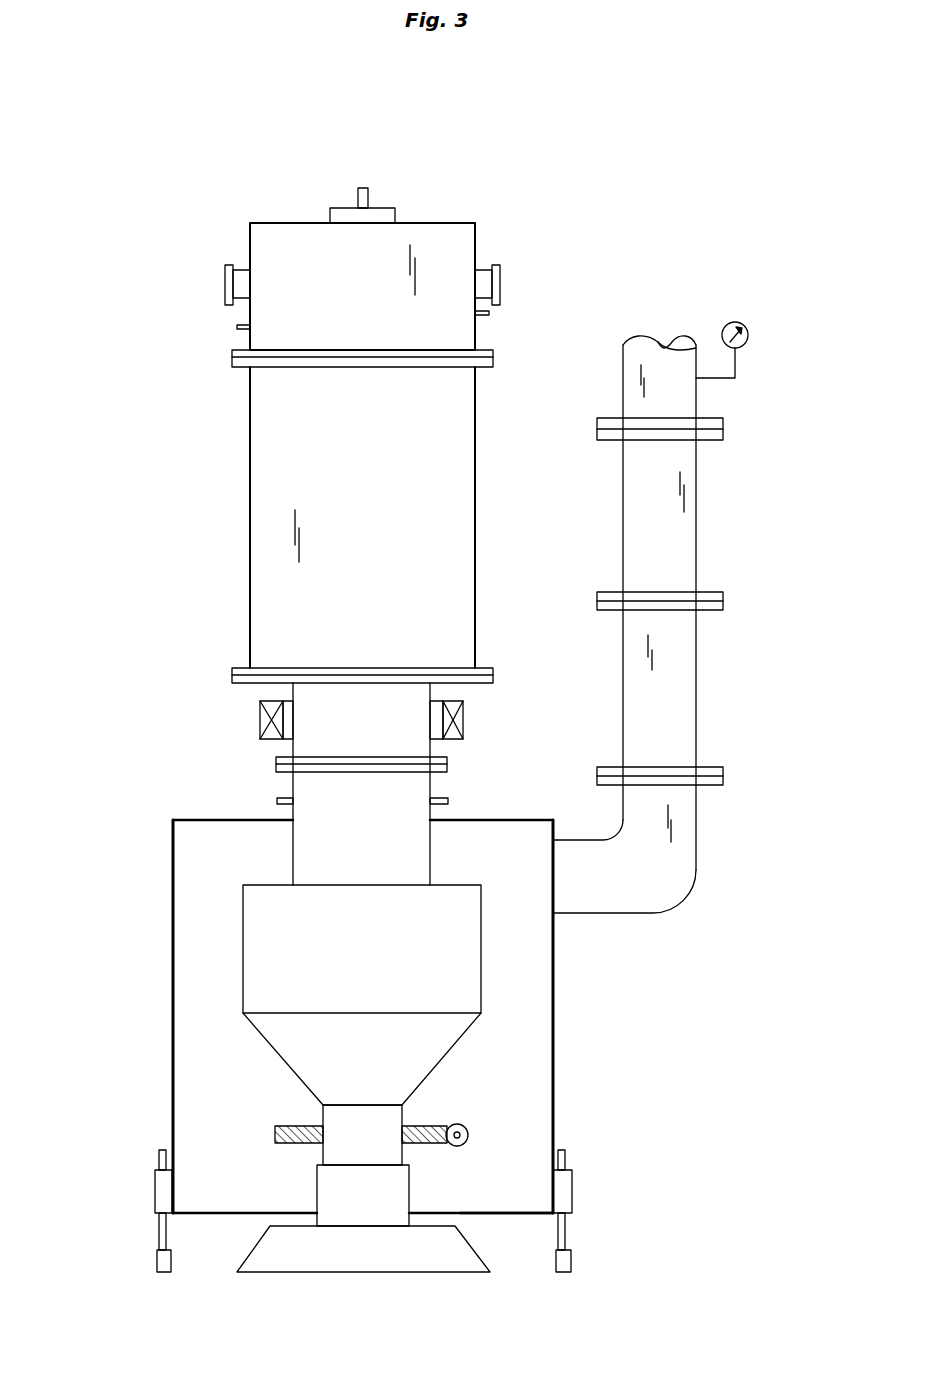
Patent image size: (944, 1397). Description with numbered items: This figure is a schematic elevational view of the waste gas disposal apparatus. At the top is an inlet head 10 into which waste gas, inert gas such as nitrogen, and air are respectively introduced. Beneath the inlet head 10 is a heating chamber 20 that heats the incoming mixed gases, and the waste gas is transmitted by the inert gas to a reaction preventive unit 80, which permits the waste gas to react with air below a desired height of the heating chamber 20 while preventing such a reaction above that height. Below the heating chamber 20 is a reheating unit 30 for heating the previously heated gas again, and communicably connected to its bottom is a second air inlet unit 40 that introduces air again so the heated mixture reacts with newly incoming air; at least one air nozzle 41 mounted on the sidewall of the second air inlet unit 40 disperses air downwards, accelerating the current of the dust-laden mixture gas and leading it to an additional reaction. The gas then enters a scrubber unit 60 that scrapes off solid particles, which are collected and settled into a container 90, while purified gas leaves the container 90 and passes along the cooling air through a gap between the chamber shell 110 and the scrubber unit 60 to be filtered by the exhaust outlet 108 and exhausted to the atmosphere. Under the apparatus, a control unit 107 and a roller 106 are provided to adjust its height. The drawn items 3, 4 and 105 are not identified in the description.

The supply pipe 3 is at (687, 519).
The pressure gauge 4 is at (735, 322).
The inlet head 10 is at (455, 236).
The heating chamber 20 is at (465, 436).
The reheating unit 30 is at (458, 718).
The second air inlet unit 40 is at (303, 788).
The air nozzle 41 is at (448, 802).
The scrubber unit 60 is at (471, 987).
The reaction preventive unit 80 is at (256, 1117).
The container 90 is at (335, 1264).
The bottom plate 105 is at (512, 1232).
The roller 106 is at (157, 1262).
The control unit 107 is at (158, 1189).
The exhaust outlet 108 is at (668, 897).
The chamber shell 110 is at (173, 1018).